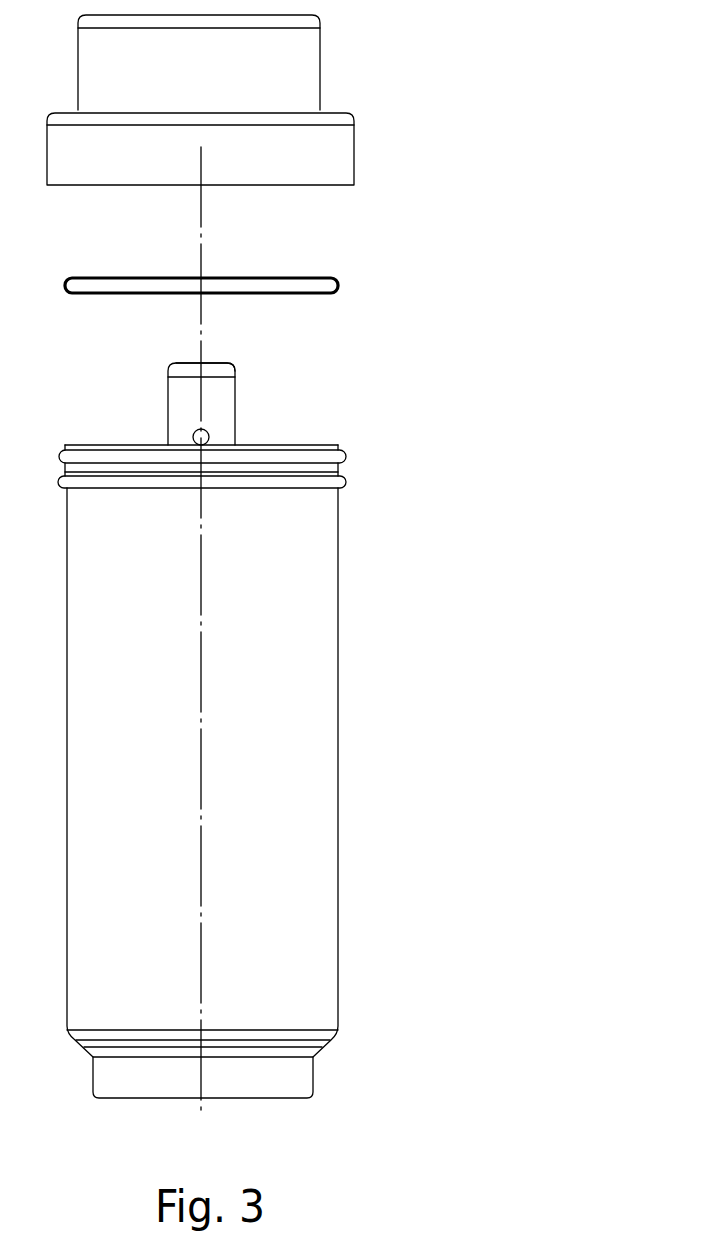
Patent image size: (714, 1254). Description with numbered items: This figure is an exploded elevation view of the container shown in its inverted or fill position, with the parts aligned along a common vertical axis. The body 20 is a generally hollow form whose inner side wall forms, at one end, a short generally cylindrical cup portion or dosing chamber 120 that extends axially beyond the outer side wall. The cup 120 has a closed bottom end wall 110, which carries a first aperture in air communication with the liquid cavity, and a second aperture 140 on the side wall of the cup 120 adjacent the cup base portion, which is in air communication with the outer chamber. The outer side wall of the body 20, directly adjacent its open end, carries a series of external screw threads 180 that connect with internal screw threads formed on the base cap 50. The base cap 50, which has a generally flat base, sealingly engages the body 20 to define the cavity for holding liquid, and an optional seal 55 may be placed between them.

The body 20 is at (300, 743).
The base cap 50 is at (300, 71).
The seal 55 is at (338, 285).
The bottom end wall 110 is at (215, 372).
The cup portion or dosing chamber 120 is at (223, 395).
The second aperture 140 is at (209, 438).
The external screw threads 180 is at (344, 479).